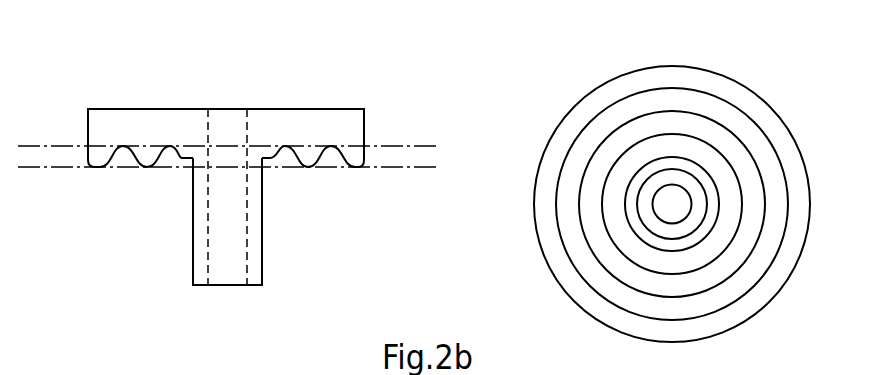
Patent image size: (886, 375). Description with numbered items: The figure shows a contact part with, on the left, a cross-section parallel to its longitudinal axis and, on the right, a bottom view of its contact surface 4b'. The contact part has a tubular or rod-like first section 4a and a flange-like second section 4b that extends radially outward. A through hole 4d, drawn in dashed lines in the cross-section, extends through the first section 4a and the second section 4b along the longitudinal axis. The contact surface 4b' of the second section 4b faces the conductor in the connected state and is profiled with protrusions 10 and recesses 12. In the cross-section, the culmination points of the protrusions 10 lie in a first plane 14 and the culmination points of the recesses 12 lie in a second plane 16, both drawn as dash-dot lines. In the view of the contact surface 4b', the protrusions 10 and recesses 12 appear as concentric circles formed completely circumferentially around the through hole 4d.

The first section 4a is at (253, 239).
The second section 4b is at (259, 128).
The contact surface 4b' is at (694, 204).
The through hole 4d is at (227, 126).
The protrusions 10 is at (100, 163).
The recesses 12 is at (125, 160).
The first plane 14 is at (53, 168).
The second plane 16 is at (53, 143).